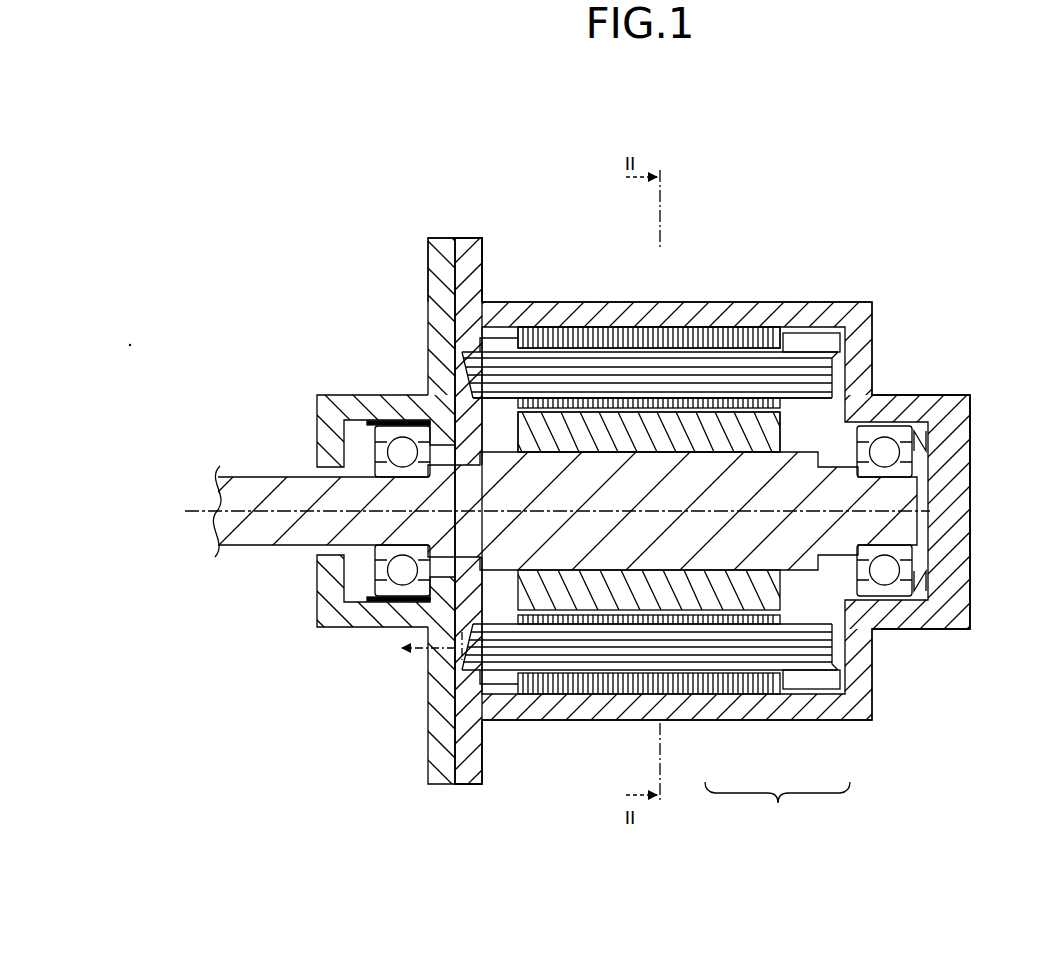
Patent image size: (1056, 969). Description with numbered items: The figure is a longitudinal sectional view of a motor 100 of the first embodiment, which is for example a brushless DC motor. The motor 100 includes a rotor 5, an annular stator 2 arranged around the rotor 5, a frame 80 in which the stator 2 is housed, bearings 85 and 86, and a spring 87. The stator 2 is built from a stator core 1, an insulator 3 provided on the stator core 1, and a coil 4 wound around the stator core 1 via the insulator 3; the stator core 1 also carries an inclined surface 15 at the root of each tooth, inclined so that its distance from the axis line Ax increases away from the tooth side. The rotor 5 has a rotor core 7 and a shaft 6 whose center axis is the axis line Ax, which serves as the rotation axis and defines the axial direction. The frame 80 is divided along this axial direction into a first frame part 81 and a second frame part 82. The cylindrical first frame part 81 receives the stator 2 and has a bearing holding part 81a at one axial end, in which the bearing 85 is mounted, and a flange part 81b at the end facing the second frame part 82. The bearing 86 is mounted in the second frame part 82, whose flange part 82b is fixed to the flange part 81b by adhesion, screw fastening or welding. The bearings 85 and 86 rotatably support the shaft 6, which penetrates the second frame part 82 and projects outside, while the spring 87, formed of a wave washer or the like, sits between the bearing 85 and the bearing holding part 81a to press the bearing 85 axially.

The motor 100 is at (950, 206).
The stator core 1 is at (737, 340).
The stator 2 is at (867, 238).
The insulator 3 is at (797, 362).
The coil 4 is at (818, 400).
The rotor 5 is at (547, 240).
The shaft 6 is at (570, 478).
The rotor core 7 is at (625, 432).
The inclined surface 15 is at (692, 402).
The frame 80 is at (496, 184).
The first frame part 81 is at (464, 250).
The bearing holding part 81a is at (893, 618).
The flange part 81b is at (482, 278).
The second frame part 82 is at (438, 240).
The flange part 82b is at (428, 278).
The bearing 85 is at (894, 432).
The bearing 86 is at (376, 470).
The spring 87 is at (934, 440).
The axis line Ax is at (198, 514).